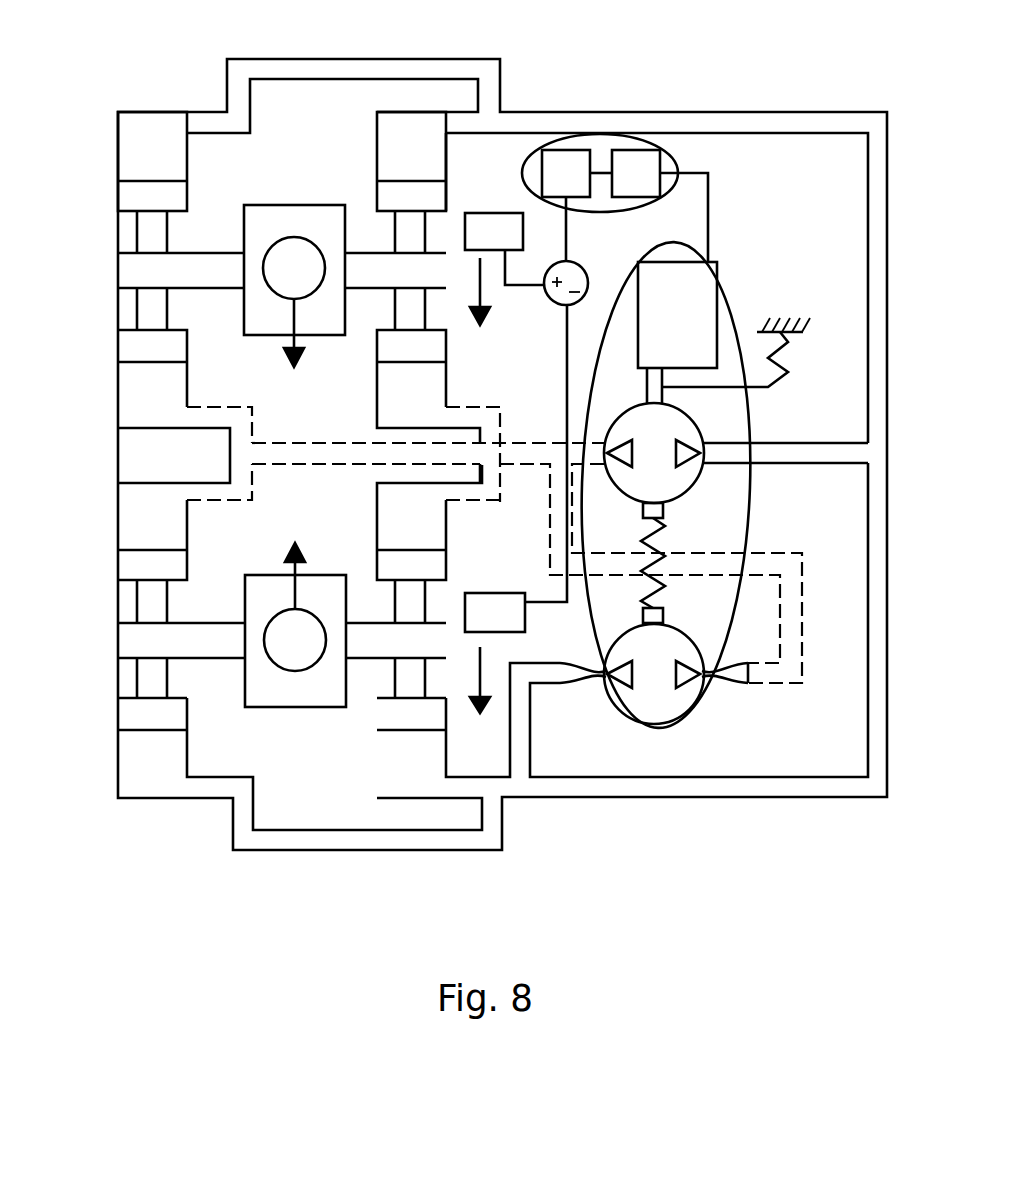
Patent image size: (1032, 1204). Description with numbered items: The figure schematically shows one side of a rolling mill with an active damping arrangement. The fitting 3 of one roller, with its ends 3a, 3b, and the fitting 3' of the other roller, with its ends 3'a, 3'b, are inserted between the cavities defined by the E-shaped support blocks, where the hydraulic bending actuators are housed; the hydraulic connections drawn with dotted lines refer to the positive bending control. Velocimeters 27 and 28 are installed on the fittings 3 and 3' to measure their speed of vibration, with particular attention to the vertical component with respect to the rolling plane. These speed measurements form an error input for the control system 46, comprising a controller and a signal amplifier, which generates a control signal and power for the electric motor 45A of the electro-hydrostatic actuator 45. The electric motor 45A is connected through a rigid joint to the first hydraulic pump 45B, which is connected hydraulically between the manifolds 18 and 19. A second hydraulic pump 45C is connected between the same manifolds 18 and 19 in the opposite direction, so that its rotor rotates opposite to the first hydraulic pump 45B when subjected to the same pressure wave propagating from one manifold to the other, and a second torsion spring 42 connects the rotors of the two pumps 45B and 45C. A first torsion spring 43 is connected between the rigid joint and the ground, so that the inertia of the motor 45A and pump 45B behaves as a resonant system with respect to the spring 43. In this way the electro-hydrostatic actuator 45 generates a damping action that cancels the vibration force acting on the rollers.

The fitting 3 is at (280, 302).
The end of fitting 3a is at (385, 265).
The end of fitting 3b is at (157, 270).
The fitting 3' is at (295, 672).
The end of fitting 3'a is at (282, 573).
The end of fitting 3'b is at (102, 615).
The manifold 18 is at (492, 455).
The manifold 19 is at (873, 452).
The velocimeter 27 is at (504, 268).
The velocimeter 28 is at (516, 509).
The second torsion spring 42 is at (660, 555).
The first torsion spring 43 is at (785, 355).
The electro-hydrostatic actuator 45 is at (735, 303).
The electric motor 45A is at (677, 332).
The first hydraulic pump 45B is at (688, 472).
The second hydraulic pump 45C is at (662, 695).
The control system 46 is at (637, 137).